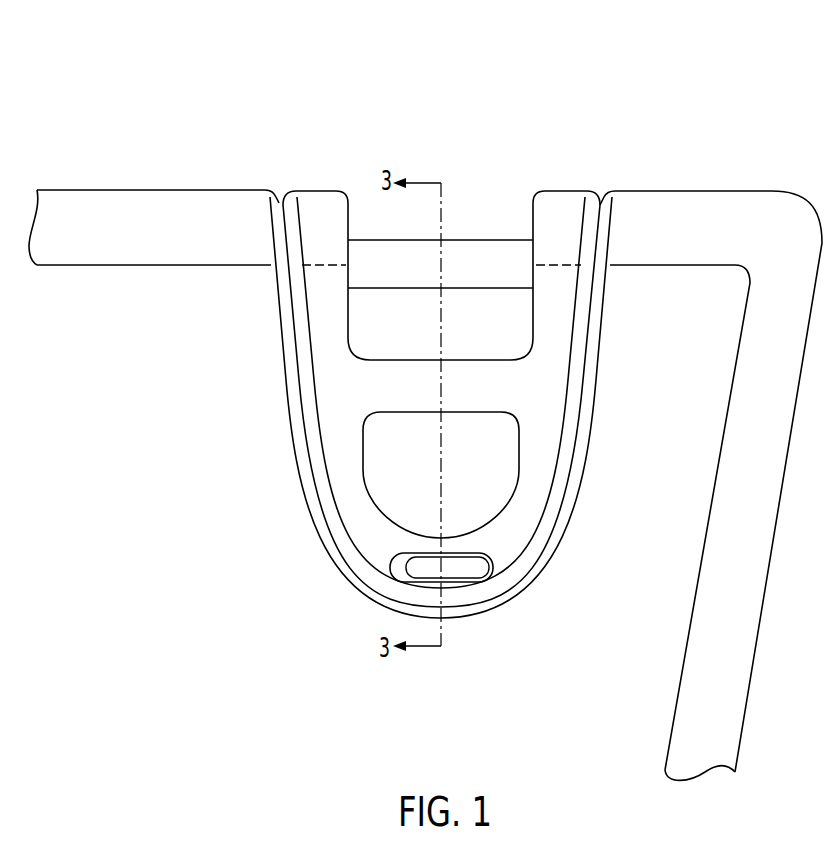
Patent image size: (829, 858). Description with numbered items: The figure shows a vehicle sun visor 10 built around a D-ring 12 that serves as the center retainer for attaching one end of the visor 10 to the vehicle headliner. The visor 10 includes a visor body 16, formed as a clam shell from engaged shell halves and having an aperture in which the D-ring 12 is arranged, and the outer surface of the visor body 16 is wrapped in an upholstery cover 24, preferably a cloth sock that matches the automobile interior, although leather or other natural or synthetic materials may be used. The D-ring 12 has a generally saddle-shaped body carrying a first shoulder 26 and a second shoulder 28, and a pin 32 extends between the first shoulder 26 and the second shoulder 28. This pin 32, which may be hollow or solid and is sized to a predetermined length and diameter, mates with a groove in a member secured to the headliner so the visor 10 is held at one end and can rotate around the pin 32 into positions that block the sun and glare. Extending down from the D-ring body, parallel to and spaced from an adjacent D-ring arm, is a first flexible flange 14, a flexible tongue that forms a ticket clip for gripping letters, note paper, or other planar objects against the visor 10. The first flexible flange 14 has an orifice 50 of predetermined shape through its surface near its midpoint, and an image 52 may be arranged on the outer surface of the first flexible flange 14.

The visor 10 is at (714, 84).
The D-ring 12 is at (310, 186).
The first flexible flange 14 is at (532, 517).
The visor body 16 is at (201, 415).
The upholstery cover 24 is at (723, 334).
The first shoulder 26 is at (340, 214).
The second shoulder 28 is at (536, 200).
The pin 32 is at (457, 253).
The orifice 50 is at (372, 495).
The image 52 is at (497, 571).